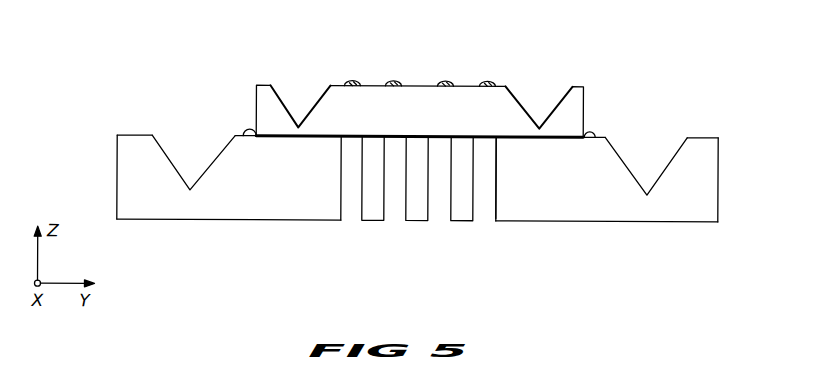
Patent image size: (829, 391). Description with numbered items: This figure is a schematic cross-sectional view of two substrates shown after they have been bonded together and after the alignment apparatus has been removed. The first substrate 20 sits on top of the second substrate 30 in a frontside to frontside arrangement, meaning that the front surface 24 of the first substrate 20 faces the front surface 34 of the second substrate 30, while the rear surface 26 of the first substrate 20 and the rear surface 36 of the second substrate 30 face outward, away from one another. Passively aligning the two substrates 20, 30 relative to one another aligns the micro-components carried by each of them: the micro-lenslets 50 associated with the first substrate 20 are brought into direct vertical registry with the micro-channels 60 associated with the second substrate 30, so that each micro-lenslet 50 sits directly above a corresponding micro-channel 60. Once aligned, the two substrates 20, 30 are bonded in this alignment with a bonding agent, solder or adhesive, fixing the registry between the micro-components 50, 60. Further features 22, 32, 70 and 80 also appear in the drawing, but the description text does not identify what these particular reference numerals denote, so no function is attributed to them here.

The first substrate 20 is at (419, 154).
The V-shaped groove in upper plate 22 is at (308, 107).
The front surface 24 is at (505, 87).
The rear surface 26 is at (330, 124).
The second substrate 30 is at (417, 183).
The V-shaped groove in lower plate 32 is at (185, 176).
The front surface 34 is at (246, 134).
The rear surface 36 is at (572, 222).
The micro-lenslets 50 is at (357, 82).
The micro-channels 60 is at (352, 212).
The solder fillet 70 is at (248, 130).
The slot sidewall 80 is at (500, 140).